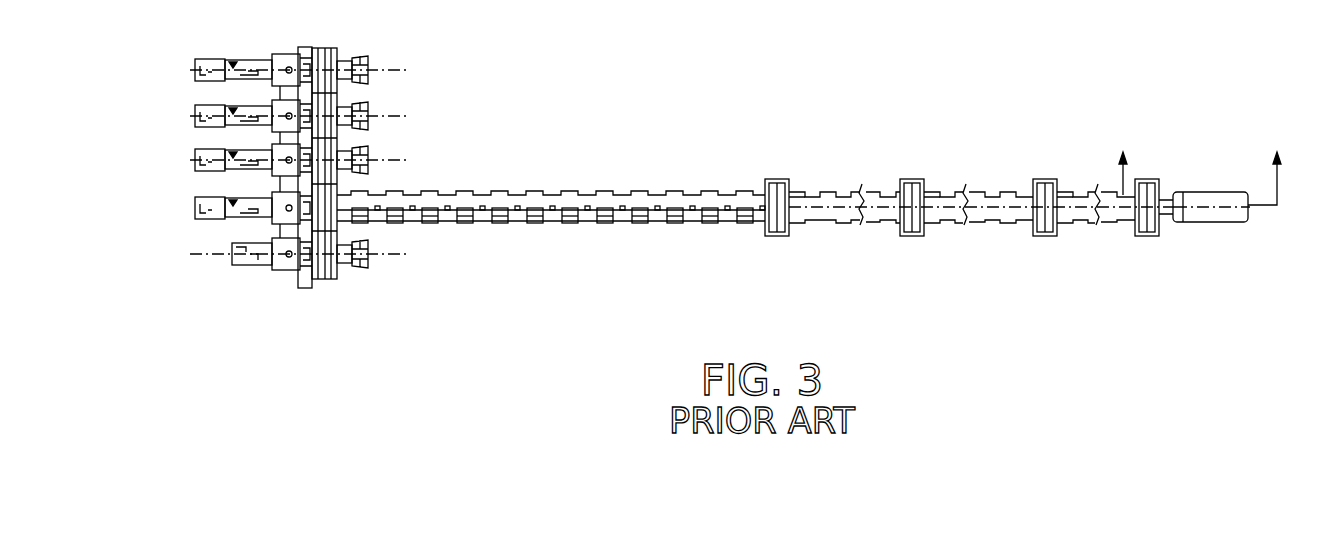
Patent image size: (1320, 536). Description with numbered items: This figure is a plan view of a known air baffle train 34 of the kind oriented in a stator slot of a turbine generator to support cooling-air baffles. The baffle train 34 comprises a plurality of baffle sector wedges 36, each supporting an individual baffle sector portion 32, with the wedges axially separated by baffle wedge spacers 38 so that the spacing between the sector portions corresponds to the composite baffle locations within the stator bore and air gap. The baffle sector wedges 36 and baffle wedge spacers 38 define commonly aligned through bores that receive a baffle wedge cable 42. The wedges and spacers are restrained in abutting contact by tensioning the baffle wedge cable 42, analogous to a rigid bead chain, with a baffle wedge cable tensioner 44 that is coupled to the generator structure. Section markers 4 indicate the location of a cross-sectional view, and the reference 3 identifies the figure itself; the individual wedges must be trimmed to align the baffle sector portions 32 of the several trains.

The shaft assembly 3 is at (888, 225).
The section line 4 is at (1199, 165).
The baffle sector portion 32 is at (776, 237).
The air baffle train 34 is at (513, 147).
The baffle sector wedge 36 is at (790, 196).
The baffle wedge spacer 38 is at (630, 225).
The baffle wedge cable 42 is at (863, 186).
The baffle wedge cable tensioner 44 is at (247, 206).